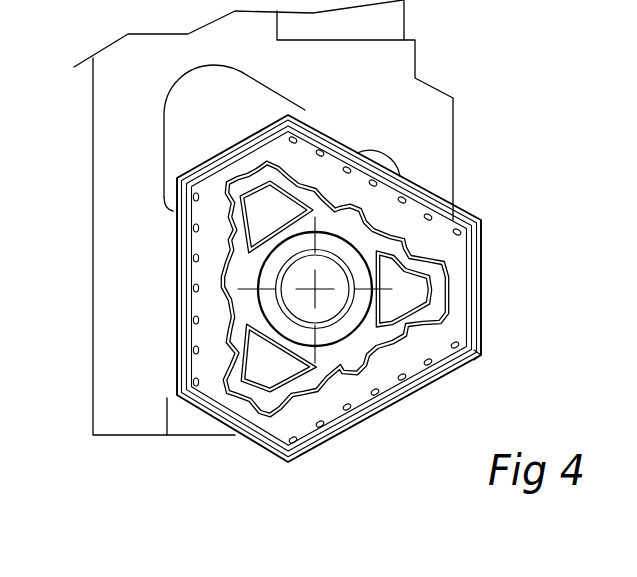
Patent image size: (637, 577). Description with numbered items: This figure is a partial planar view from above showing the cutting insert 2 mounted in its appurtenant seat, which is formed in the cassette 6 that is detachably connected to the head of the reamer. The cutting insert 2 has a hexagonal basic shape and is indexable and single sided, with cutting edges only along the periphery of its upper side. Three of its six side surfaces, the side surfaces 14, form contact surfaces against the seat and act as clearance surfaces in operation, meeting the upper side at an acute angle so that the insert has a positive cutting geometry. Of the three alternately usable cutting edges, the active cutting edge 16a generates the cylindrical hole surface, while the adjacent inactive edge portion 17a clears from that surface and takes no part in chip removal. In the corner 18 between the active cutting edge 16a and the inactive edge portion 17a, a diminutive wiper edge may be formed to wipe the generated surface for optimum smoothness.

The cutting insert 2 is at (485, 245).
The cassette 6 is at (440, 80).
The side surfaces 14 is at (173, 272).
The active cutting edge 16a is at (378, 415).
The inactive edge portion 17a is at (482, 282).
The corner 18 is at (478, 354).